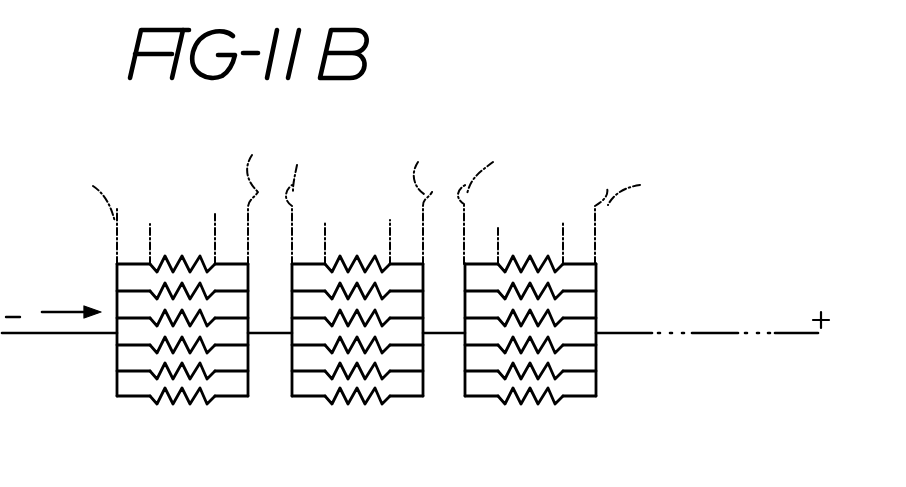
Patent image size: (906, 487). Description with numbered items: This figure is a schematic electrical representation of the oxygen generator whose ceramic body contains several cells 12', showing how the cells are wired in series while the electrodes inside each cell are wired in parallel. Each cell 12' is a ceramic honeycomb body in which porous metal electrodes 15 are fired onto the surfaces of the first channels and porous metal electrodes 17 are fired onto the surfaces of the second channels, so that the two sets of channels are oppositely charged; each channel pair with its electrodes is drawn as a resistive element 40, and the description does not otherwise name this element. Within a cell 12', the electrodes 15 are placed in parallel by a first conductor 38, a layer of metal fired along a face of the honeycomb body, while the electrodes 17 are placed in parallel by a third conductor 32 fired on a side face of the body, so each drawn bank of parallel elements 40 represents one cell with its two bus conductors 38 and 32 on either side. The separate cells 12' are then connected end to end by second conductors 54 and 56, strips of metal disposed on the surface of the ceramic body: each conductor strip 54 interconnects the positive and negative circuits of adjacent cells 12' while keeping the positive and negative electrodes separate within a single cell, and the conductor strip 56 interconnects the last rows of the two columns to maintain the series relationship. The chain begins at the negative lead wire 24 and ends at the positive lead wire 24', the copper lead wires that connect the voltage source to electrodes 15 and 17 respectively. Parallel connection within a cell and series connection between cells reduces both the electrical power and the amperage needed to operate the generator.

The cell 12' is at (358, 366).
The electrode 15 is at (133, 231).
The electrode 17 is at (228, 241).
The lead wire 24 is at (59, 356).
The lead wire 24' is at (787, 296).
The third conductor 32 is at (460, 193).
The first conductor 38 is at (294, 197).
The resistor 40 is at (356, 311).
The second conductor 54 is at (272, 336).
The second conductor 56 is at (716, 336).